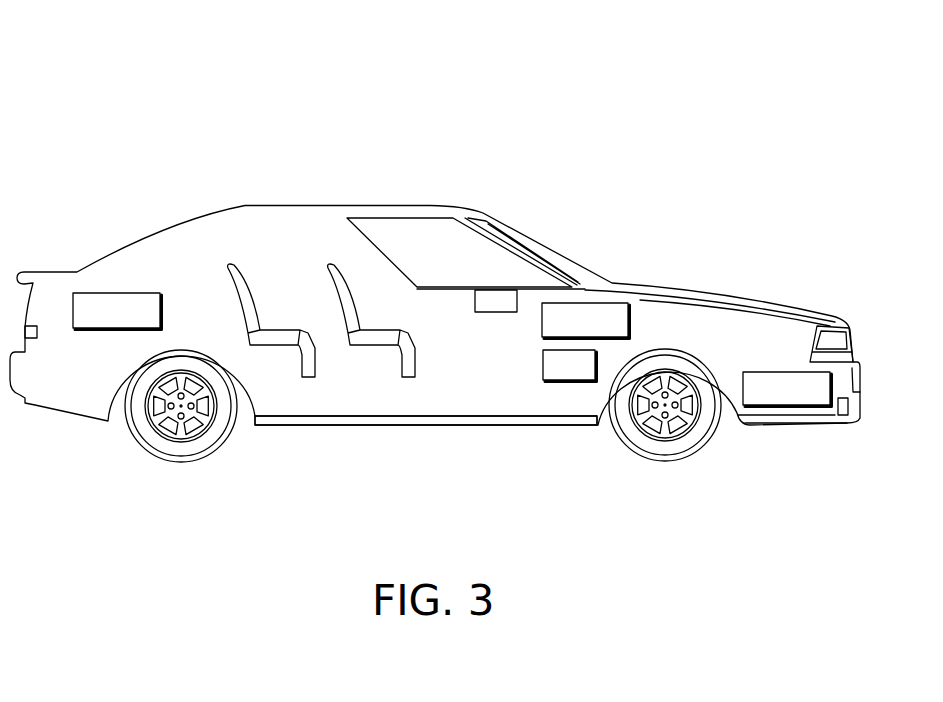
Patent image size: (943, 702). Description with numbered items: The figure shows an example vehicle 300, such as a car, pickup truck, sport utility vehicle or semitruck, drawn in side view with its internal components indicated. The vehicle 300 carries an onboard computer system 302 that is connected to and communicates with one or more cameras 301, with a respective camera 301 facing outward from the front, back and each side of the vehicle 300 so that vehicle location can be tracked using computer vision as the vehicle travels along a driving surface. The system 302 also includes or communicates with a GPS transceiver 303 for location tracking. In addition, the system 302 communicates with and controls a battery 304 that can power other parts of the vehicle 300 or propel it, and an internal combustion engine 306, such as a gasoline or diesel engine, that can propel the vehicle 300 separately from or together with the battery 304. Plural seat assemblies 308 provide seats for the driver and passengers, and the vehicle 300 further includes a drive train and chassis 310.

The vehicle 300 is at (117, 44).
The camera 301 is at (37, 335).
The onboard computer system 302 is at (582, 302).
The GPS transceiver 303 is at (565, 381).
The battery 304 is at (115, 292).
The internal combustion engine 306 is at (786, 370).
The seat assembly 308 is at (331, 264).
The drive train and chassis 310 is at (510, 415).